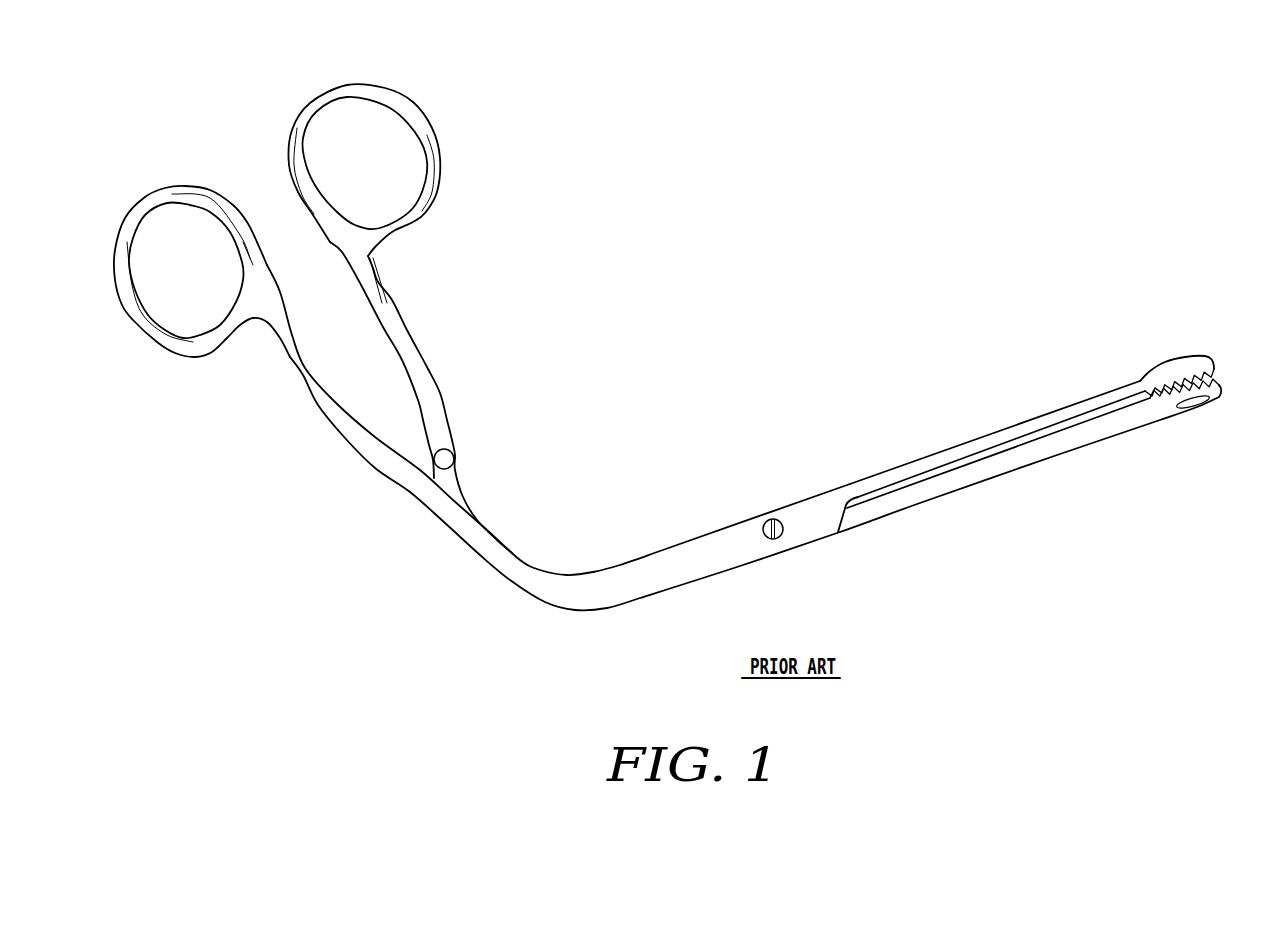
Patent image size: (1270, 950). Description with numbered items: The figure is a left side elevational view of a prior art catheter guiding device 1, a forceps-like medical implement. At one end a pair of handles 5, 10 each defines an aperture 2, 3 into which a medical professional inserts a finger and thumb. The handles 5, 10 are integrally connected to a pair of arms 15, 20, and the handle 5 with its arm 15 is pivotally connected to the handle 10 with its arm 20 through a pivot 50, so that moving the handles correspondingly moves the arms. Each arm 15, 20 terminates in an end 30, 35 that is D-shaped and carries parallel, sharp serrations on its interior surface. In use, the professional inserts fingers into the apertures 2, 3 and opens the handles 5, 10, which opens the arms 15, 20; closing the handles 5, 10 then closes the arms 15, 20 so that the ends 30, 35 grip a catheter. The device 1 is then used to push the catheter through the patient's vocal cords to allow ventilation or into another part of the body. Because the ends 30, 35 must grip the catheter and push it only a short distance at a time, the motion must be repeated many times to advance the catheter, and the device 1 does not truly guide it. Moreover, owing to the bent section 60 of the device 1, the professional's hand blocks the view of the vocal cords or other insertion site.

The catheter guiding device 1 is at (668, 317).
The aperture 2 is at (377, 140).
The aperture 3 is at (175, 263).
The handle 5 is at (330, 90).
The handle 10 is at (143, 327).
The arm 15 is at (1096, 401).
The arm 20 is at (1083, 442).
The end 30 is at (1221, 394).
The end 35 is at (1214, 363).
The pivot 50 is at (782, 522).
The bent section 60 is at (570, 592).